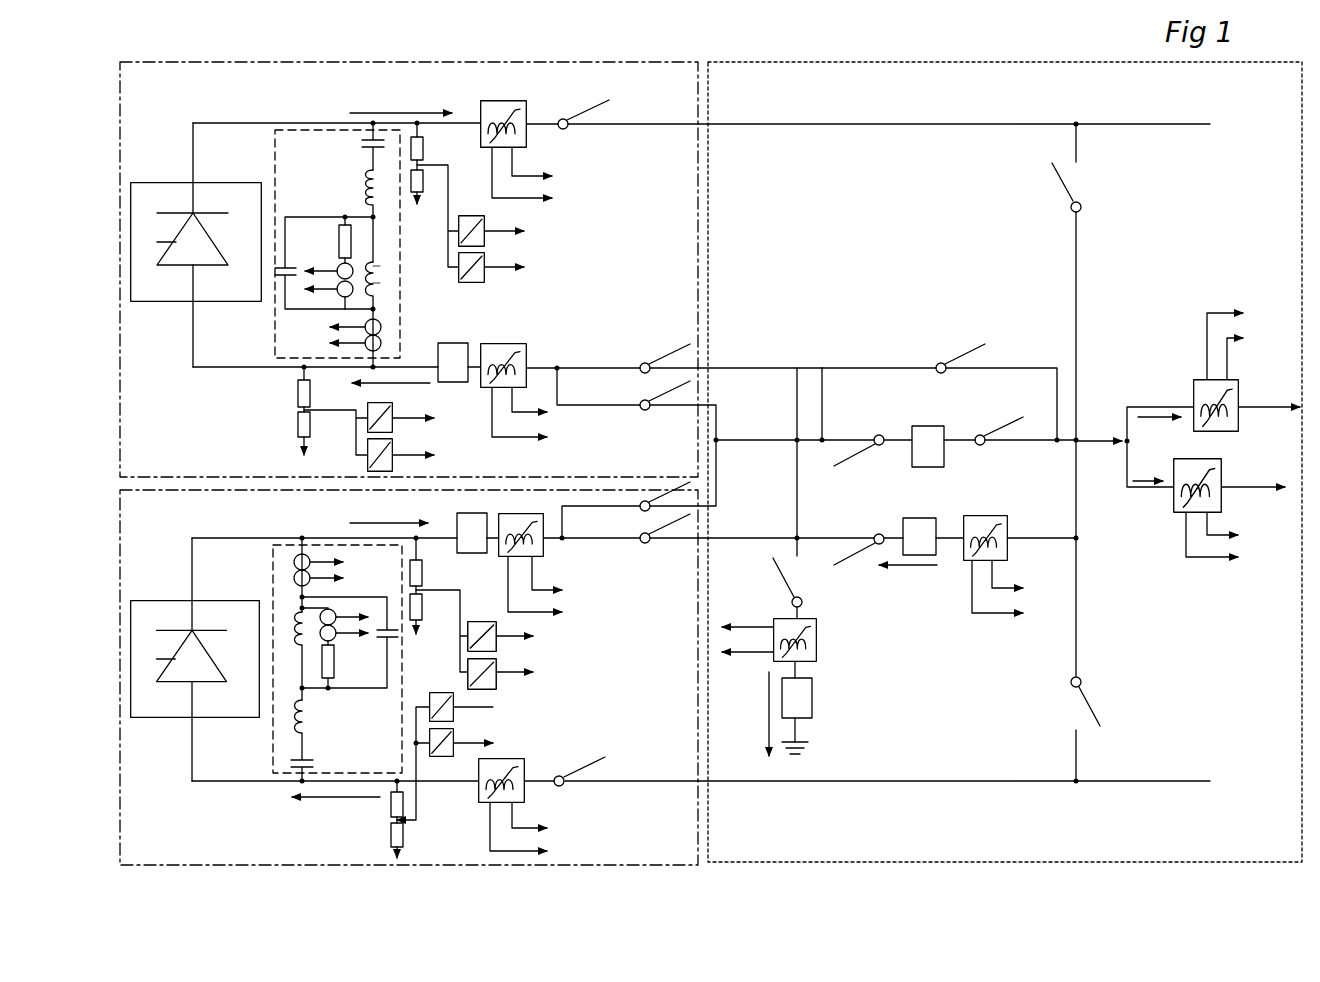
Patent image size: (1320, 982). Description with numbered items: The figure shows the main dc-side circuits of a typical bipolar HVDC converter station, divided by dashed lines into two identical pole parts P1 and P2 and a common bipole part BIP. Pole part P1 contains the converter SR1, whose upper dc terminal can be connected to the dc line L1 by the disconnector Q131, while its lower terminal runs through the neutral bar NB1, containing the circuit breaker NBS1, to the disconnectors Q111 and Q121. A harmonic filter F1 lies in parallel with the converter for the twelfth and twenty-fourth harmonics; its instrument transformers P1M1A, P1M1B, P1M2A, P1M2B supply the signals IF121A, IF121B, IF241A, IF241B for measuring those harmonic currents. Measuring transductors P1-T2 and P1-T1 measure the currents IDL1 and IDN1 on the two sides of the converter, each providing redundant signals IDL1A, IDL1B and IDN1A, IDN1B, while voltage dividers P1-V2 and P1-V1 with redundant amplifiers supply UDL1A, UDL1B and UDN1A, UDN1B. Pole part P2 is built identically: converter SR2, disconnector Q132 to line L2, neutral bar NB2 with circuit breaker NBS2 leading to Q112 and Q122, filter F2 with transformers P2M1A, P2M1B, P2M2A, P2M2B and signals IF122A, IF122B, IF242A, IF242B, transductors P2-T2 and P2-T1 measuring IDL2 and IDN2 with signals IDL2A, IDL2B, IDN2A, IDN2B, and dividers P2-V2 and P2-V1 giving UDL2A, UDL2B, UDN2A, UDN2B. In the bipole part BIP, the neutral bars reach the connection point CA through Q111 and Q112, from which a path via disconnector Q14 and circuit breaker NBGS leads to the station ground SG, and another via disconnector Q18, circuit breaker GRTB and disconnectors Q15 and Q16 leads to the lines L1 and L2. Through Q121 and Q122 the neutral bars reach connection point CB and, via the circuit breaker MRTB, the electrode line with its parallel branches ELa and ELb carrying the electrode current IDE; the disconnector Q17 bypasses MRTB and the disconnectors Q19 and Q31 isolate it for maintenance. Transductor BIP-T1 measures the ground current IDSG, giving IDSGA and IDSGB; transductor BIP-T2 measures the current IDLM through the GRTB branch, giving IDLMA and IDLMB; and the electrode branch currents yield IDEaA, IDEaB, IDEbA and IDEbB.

The pole part P1 is at (409, 269).
The pole part P2 is at (409, 677).
The bipole part BIP is at (1005, 462).
The converter SR1 is at (194, 245).
The converter SR2 is at (193, 659).
The harmonic filter F1 is at (337, 245).
The harmonic filter F2 is at (337, 659).
The current IDL1 is at (401, 104).
The current IDL2 is at (336, 807).
The measuring transductor P1-T2 is at (519, 115).
The measuring transductor P2-T2 is at (521, 779).
The measuring transductor P1-T1 is at (560, 357).
The measuring transductor P2-T1 is at (569, 526).
The measuring voltage divider P1-V1 is at (332, 418).
The measuring voltage divider P1-V2 is at (431, 195).
The measuring voltage divider P2-V1 is at (438, 605).
The measuring voltage divider P2-V2 is at (374, 819).
The disconnector Q131 is at (583, 117).
The disconnector Q132 is at (579, 774).
The disconnector Q111 is at (731, 361).
The disconnector Q121 is at (678, 443).
The disconnector Q122 is at (665, 499).
The disconnector Q112 is at (757, 531).
The disconnector Q14 is at (792, 578).
The disconnector Q15 is at (1079, 187).
The disconnector Q16 is at (1076, 701).
The disconnector Q17 is at (941, 393).
The disconnector Q18 is at (859, 549).
The disconnector Q19 is at (873, 450).
The disconnector Q31 is at (1025, 433).
The dc line L1 is at (889, 109).
The dc line L2 is at (887, 801).
The neutral bar NB1 is at (598, 377).
The neutral bar NB2 is at (600, 532).
The circuit breaker NBS1 is at (458, 354).
The circuit breaker NBS2 is at (474, 525).
The connection point CA is at (919, 529).
The connection point CB is at (794, 453).
The circuit breaker MRTB is at (940, 437).
The circuit breaker GRTB is at (917, 527).
The measuring transductor BIP-T1 is at (818, 648).
The measuring transductor BIP-T2 is at (984, 528).
The circuit breaker NBGS is at (817, 710).
The station ground SG is at (808, 749).
The electrode current IDE is at (1134, 447).
The electrode line branch ELa is at (1269, 397).
The electrode line branch ELb is at (1253, 477).
The measurement signal IDEaA is at (1247, 343).
The measurement signal IDEaB is at (1257, 355).
The measurement signal IDEbA is at (1236, 539).
The measurement signal IDEbB is at (1246, 528).
The current IDLM is at (908, 574).
The measurement signal IDLMA is at (1020, 591).
The measurement signal IDLMB is at (1030, 578).
The current IDSG is at (741, 714).
The measurement signal IDSGA is at (746, 618).
The measurement signal IDSGB is at (746, 643).
The measurement signal IDL1A is at (542, 177).
The measurement signal IDL1B is at (552, 166).
The measurement signal IDL2A is at (539, 831).
The measurement signal IDL2B is at (550, 819).
The current IDN1 is at (391, 375).
The current IDN2 is at (389, 514).
The measurement signal IDN1A is at (541, 416).
The measurement signal IDN1B is at (551, 404).
The measurement signal IDN2A is at (557, 588).
The measurement signal IDN2B is at (569, 577).
The measurement signal UDL1A is at (495, 230).
The measurement signal UDL1B is at (495, 266).
The measurement signal UDL2A is at (468, 756).
The measurement signal UDL2B is at (477, 743).
The measurement signal UDN1A is at (404, 416).
The measurement signal UDN1B is at (404, 454).
The measurement signal UDN2A is at (505, 635).
The measurement signal UDN2B is at (505, 672).
The output signal IF121A is at (325, 248).
The output signal IF121B is at (325, 295).
The output signal IF241A is at (332, 327).
The output signal IF241B is at (332, 343).
The output signal IF122A is at (351, 612).
The output signal IF122B is at (351, 656).
The output signal IF242A is at (342, 562).
The output signal IF242B is at (342, 578).
The instrument transformer P1M1A is at (380, 266).
The instrument transformer P1M1B is at (380, 283).
The instrument transformer P1M2A is at (381, 320).
The instrument transformer P1M2B is at (381, 338).
The instrument transformer P2M1A is at (298, 614).
The instrument transformer P2M1B is at (298, 632).
The instrument transformer P2M2A is at (293, 560).
The instrument transformer P2M2B is at (293, 577).